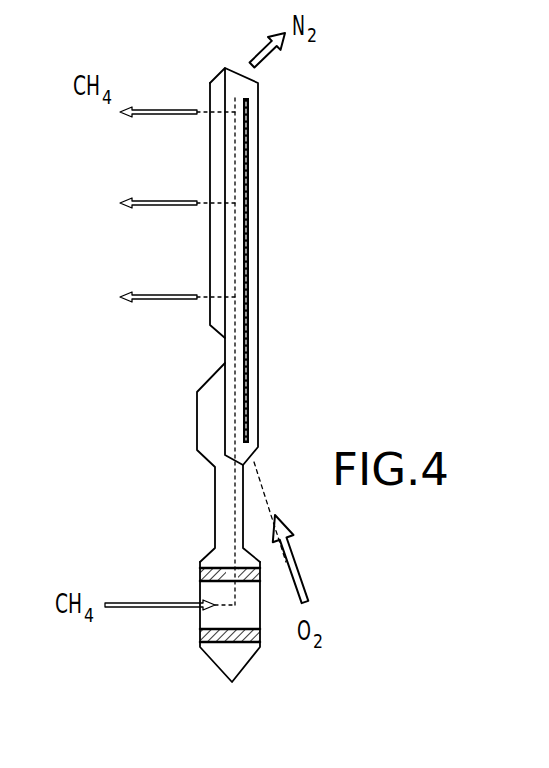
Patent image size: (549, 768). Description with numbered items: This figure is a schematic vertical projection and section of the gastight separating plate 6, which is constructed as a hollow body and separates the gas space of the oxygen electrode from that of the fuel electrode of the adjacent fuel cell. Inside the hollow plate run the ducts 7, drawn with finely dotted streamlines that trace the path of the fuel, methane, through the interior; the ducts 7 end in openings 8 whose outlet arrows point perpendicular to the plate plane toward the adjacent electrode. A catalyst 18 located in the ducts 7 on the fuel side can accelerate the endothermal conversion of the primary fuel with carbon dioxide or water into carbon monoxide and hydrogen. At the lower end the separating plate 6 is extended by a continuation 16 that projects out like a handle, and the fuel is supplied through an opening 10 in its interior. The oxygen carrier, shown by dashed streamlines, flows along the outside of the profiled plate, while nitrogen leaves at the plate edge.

The separating plate 6 is at (258, 397).
The ducts 7 is at (215, 258).
The openings 8 is at (210, 115).
The opening 10 is at (222, 562).
The continuation 16 is at (213, 502).
The catalyst 18 is at (246, 262).